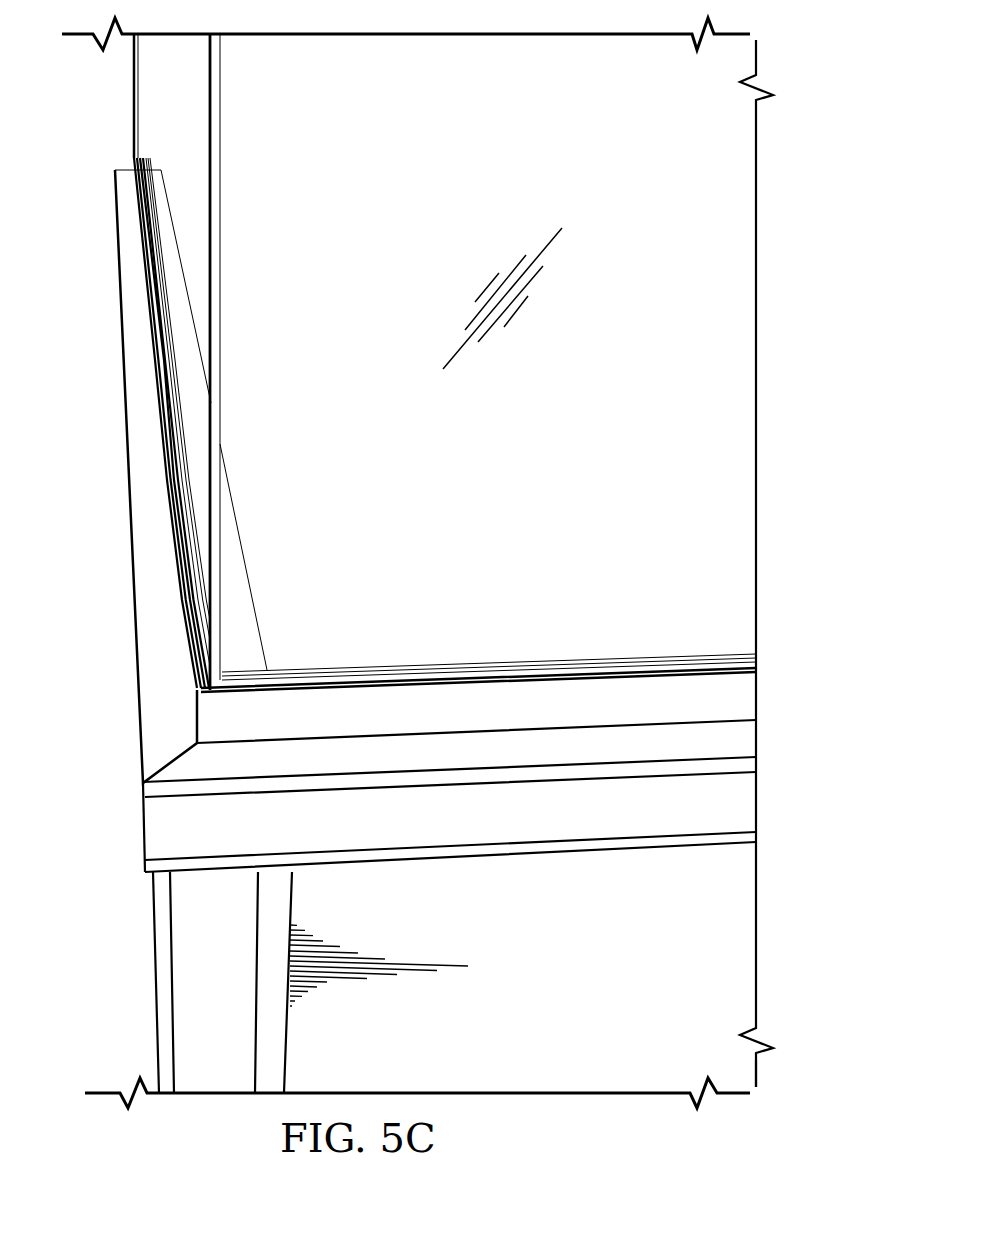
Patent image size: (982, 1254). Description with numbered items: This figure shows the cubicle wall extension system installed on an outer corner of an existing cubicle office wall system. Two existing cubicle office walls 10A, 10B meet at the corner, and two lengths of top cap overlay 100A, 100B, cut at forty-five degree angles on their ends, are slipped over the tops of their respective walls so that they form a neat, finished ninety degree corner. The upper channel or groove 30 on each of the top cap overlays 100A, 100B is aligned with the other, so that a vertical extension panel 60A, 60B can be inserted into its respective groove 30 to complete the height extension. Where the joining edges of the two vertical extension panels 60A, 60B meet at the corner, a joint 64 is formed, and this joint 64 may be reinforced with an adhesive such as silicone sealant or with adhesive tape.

The existing cubicle office wall 10A is at (155, 962).
The existing cubicle office wall 10B is at (748, 981).
The upper channel or groove 30 is at (150, 318).
The vertical extension panel 60A is at (133, 90).
The vertical extension panel 60B is at (748, 211).
The joint 64 is at (218, 262).
The top cap overlay 100A is at (130, 478).
The top cap overlay 100B is at (623, 668).